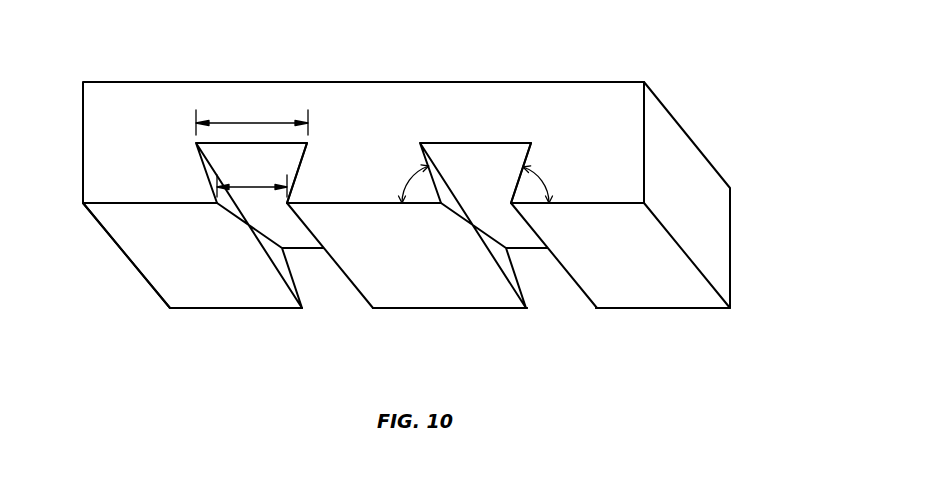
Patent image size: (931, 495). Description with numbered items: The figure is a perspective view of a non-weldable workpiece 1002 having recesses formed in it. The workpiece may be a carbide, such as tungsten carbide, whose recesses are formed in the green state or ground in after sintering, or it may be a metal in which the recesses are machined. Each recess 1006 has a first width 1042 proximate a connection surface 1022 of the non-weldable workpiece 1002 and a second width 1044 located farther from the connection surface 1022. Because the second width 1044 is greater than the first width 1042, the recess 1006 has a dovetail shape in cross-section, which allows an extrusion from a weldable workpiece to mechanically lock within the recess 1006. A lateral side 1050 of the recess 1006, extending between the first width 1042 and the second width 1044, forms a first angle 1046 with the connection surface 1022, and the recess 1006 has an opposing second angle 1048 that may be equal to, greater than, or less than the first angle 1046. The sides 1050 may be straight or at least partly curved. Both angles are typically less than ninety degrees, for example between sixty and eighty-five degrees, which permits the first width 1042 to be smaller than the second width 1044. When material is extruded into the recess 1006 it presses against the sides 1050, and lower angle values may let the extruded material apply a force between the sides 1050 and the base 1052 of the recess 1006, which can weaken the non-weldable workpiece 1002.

The non-weldable workpiece 1002 is at (587, 82).
The recess 1006 is at (475, 143).
The connection surface 1022 is at (617, 278).
The first width 1042 is at (257, 187).
The second width 1044 is at (257, 123).
The first angle 1046 is at (413, 192).
The second angle 1048 is at (543, 173).
The lateral side 1050 is at (298, 167).
The base 1052 is at (521, 143).